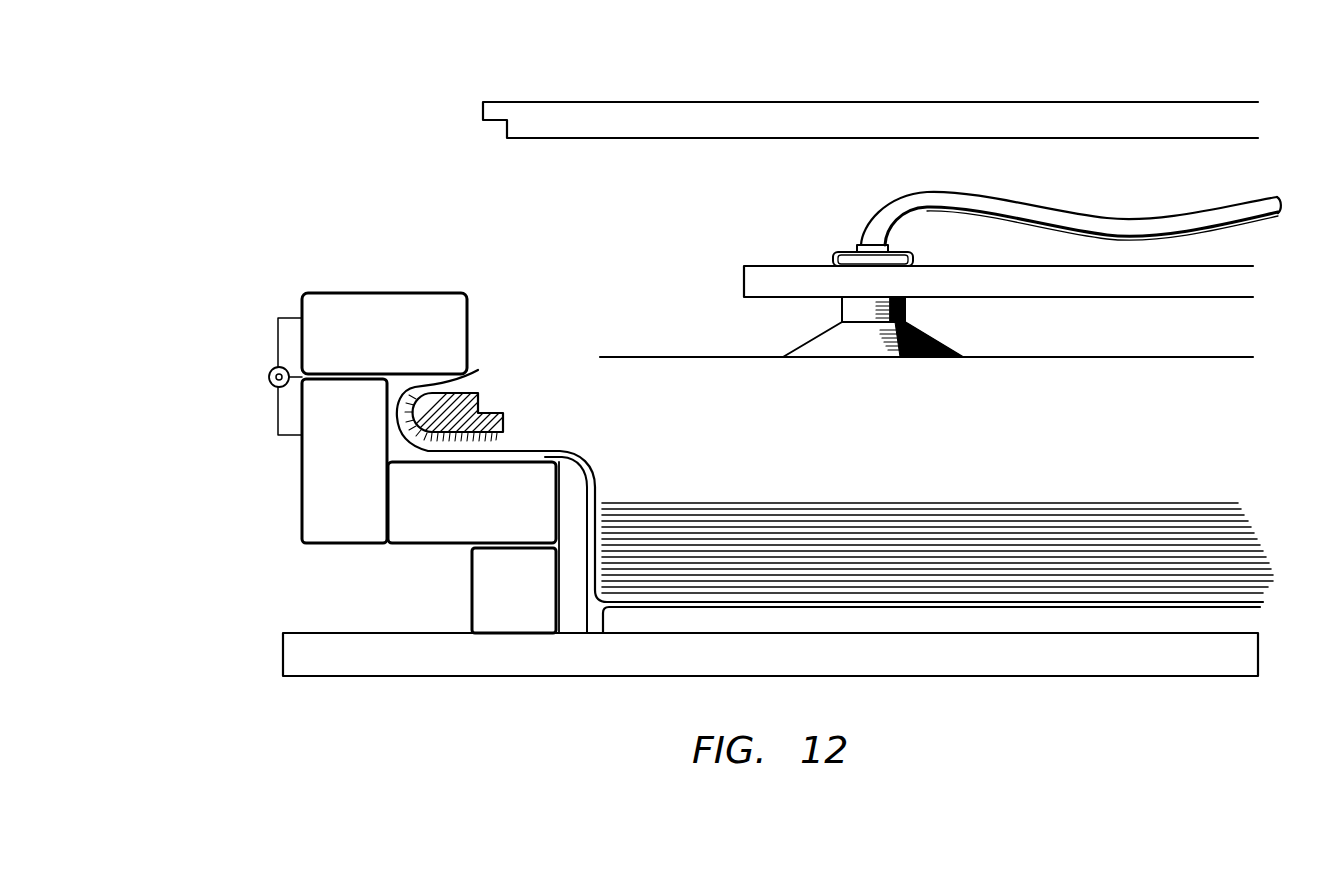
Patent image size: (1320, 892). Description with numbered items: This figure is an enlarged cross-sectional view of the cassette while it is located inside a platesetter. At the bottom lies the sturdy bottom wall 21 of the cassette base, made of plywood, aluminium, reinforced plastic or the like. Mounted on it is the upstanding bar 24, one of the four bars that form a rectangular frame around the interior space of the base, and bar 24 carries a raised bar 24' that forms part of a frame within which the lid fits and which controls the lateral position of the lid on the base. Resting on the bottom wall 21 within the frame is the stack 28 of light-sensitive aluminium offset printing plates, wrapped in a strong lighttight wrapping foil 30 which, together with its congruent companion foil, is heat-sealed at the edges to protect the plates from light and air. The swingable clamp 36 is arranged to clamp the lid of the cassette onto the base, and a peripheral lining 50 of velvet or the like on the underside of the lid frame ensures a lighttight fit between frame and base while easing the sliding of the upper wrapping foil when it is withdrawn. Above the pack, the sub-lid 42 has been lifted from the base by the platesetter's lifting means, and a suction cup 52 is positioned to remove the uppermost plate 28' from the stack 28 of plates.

The bottom wall 21 is at (300, 660).
The upstanding bar 24 is at (464, 547).
The raised bar 24' is at (292, 461).
The stack of plates 28 is at (937, 517).
The uppermost plate 28' is at (926, 311).
The lighttight wrapping foil 30 is at (592, 476).
The clamp 36 is at (405, 320).
The sub-lid 42 is at (950, 118).
The peripheral lining 50 is at (423, 447).
The suction cup 52 is at (820, 343).